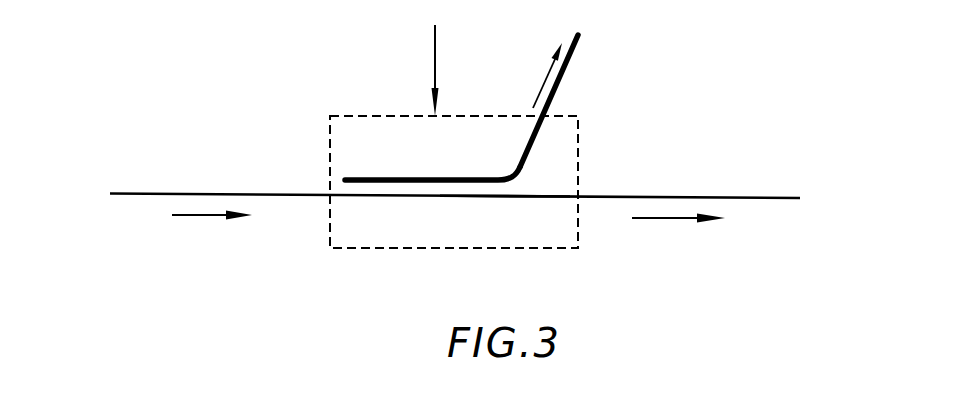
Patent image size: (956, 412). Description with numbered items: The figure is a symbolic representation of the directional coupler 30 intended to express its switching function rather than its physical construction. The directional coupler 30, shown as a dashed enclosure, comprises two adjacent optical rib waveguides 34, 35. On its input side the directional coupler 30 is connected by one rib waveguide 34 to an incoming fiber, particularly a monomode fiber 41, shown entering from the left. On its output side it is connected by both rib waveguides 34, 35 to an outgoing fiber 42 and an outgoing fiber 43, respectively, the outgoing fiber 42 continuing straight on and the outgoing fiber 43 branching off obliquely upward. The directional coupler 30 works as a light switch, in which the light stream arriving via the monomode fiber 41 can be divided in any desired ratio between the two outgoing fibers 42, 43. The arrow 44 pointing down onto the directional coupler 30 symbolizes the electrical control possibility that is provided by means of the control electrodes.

The directional coupler 30 is at (387, 227).
The rib waveguide 34 is at (498, 198).
The rib waveguide 35 is at (353, 173).
The monomode fiber 41 is at (122, 194).
The outgoing fiber 42 is at (737, 197).
The outgoing fiber 43 is at (572, 58).
The arrow 44 is at (435, 48).